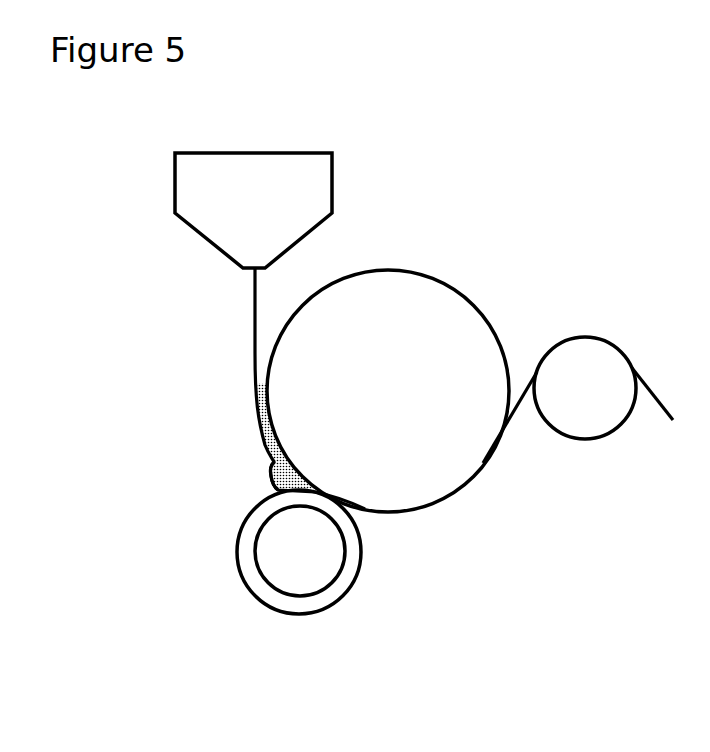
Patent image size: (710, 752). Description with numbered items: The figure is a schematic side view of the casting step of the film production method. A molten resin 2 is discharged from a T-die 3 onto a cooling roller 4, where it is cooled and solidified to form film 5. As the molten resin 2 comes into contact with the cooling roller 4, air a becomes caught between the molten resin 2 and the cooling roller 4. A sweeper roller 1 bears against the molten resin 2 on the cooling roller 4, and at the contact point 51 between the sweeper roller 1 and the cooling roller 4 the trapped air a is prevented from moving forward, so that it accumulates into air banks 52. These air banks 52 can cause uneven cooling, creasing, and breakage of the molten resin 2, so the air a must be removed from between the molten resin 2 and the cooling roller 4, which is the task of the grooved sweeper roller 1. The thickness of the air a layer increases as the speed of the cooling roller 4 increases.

The sweeper roller 1 is at (237, 541).
The molten resin 2 is at (253, 357).
The T-die 3 is at (337, 190).
The cooling roller 4 is at (448, 297).
The film 5 is at (657, 398).
The contact point 51 is at (330, 497).
The air banks 52 is at (275, 482).
The air a is at (262, 375).